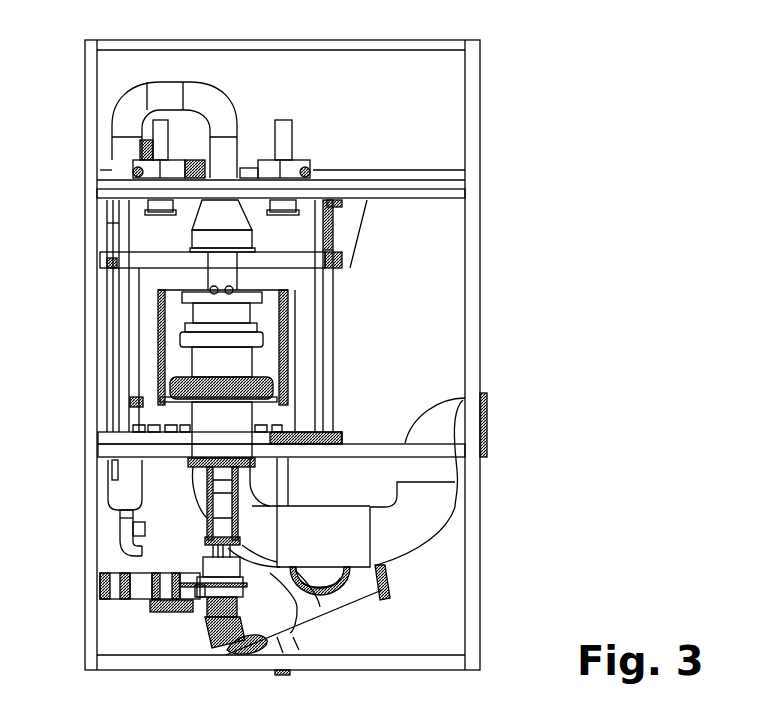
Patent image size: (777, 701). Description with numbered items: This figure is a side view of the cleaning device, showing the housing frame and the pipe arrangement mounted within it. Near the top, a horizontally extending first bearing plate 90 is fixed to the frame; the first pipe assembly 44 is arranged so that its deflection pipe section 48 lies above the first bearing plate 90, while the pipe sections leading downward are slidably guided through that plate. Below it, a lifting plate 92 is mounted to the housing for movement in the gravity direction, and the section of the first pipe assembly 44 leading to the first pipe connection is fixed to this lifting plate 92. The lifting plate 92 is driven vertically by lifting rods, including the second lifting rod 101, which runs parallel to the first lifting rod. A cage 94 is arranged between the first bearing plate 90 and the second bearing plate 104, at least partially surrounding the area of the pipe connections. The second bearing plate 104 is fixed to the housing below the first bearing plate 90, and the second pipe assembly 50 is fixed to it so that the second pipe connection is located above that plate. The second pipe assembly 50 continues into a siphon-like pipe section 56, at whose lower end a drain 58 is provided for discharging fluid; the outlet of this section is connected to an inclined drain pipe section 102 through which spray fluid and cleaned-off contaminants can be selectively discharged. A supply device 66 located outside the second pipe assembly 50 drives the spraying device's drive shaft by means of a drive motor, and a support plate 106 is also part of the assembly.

The first pipe assembly 44 is at (232, 97).
The deflection pipe section 48 is at (167, 92).
The second pipe assembly 50 is at (470, 503).
The siphon-like pipe section 56 is at (417, 541).
The drain 58 is at (340, 600).
The supply device 66 is at (185, 630).
The first bearing plate 90 is at (110, 186).
The lifting plate 92 is at (133, 260).
The cage 94 is at (330, 222).
The second lifting rod 101 is at (133, 223).
The inclined drain pipe section 102 is at (313, 620).
The second bearing plate 104 is at (373, 448).
The support plate 106 is at (183, 332).